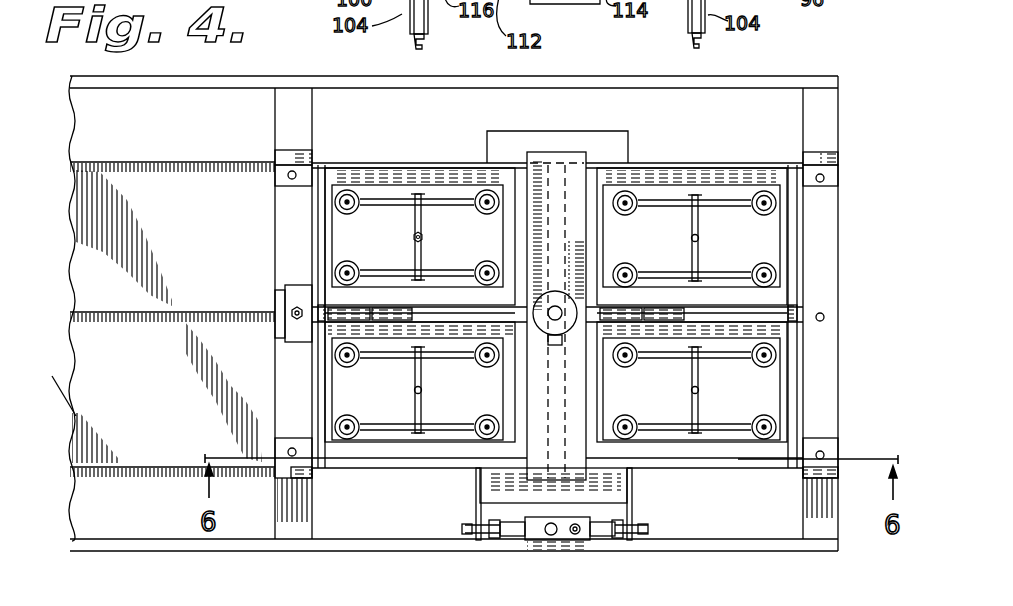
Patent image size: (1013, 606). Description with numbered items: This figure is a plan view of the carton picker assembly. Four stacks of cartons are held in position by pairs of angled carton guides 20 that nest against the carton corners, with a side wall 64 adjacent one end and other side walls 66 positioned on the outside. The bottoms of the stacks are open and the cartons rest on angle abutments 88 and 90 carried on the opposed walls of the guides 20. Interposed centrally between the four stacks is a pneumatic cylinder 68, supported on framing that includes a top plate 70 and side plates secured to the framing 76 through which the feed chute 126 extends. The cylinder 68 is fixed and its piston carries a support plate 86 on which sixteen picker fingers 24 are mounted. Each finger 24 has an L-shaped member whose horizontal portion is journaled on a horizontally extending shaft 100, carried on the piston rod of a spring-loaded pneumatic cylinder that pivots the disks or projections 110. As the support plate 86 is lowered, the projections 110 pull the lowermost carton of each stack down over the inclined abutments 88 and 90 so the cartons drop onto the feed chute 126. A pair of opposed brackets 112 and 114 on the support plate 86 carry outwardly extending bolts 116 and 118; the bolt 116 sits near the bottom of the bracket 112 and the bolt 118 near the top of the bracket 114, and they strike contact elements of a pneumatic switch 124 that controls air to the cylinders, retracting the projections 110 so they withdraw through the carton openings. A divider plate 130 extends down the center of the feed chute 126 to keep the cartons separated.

The angled carton guides 20 is at (336, 306).
The picker fingers 24 is at (336, 266).
The side wall 64 is at (326, 158).
The side walls 66 is at (292, 150).
The pneumatic cylinder 68 is at (556, 294).
The top plate 70 is at (548, 168).
The framing 76 is at (678, 88).
The support plate 86 is at (324, 233).
The angle abutment 88 is at (592, 202).
The angle abutment 90 is at (792, 204).
The horizontally extending shaft 100 is at (422, 222).
The projections 110 is at (622, 210).
The bracket 112 is at (480, 488).
The bracket 114 is at (628, 478).
The bolt 116 is at (462, 528).
The bolt 118 is at (644, 530).
The pneumatic switch 124 is at (532, 526).
The feed chute 126 is at (432, 180).
The divider plate 130 is at (170, 312).